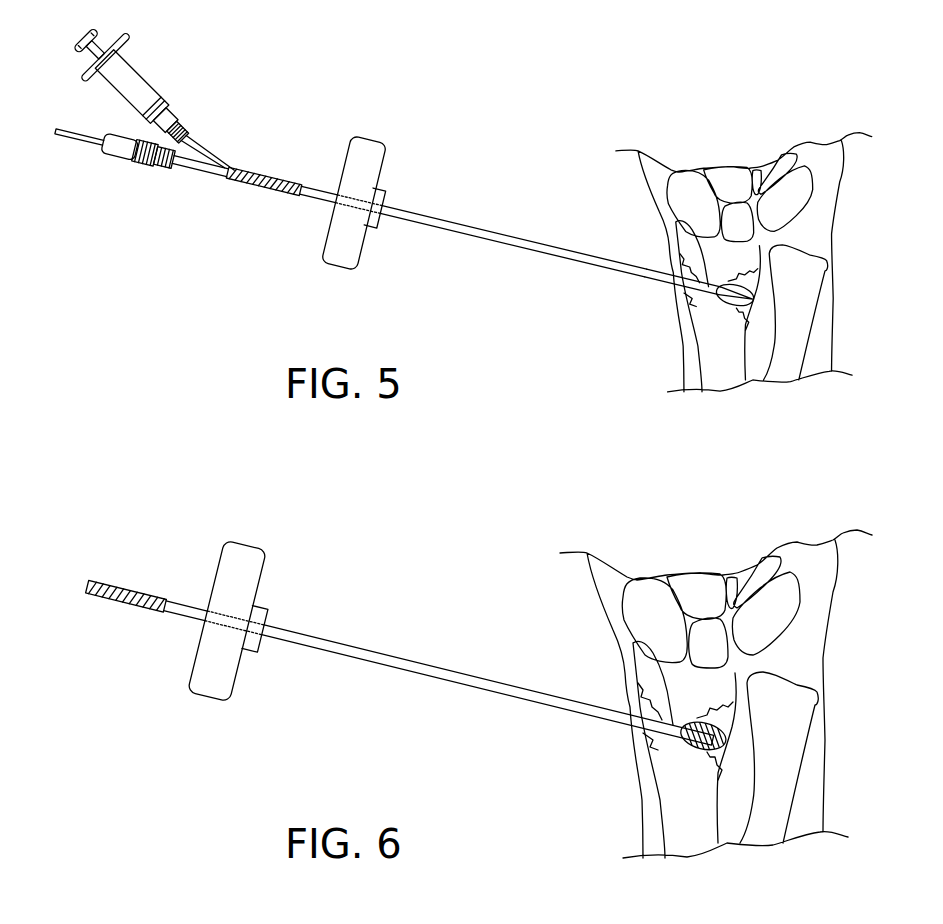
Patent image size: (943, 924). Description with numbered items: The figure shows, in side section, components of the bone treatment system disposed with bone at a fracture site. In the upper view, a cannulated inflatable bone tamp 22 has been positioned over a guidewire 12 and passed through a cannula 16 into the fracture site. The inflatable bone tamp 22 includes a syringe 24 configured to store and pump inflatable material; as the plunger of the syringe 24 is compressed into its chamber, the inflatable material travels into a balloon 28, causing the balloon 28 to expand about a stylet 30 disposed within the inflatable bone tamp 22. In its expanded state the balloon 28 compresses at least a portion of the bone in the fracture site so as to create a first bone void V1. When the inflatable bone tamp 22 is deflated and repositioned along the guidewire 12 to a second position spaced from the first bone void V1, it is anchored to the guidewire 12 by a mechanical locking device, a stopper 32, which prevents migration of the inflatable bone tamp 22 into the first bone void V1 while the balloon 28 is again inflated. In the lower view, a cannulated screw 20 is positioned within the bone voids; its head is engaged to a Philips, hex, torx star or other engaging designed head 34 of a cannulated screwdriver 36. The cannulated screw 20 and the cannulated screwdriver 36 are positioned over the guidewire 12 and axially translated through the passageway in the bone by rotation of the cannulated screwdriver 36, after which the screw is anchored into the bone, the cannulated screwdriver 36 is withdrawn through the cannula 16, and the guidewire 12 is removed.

In FIG. 5, the guidewire 12 is at (80, 146).
In FIG. 5, the cannula 16 is at (478, 228).
In FIG. 6, the cannula 16 is at (446, 670).
In FIG. 6, the cannulated screw 20 is at (707, 748).
In FIG. 5, the inflatable bone tamp 22 is at (697, 285).
In FIG. 5, the syringe 24 is at (146, 84).
In FIG. 5, the balloon 28 is at (752, 292).
In FIG. 5, the stylet 30 is at (753, 292).
In FIG. 5, the stopper 32 is at (118, 157).
In FIG. 6, the engaging designed head 34 is at (687, 723).
In FIG. 6, the cannulated screwdriver 36 is at (687, 738).
In FIG. 6, the first bone void V1 is at (712, 750).